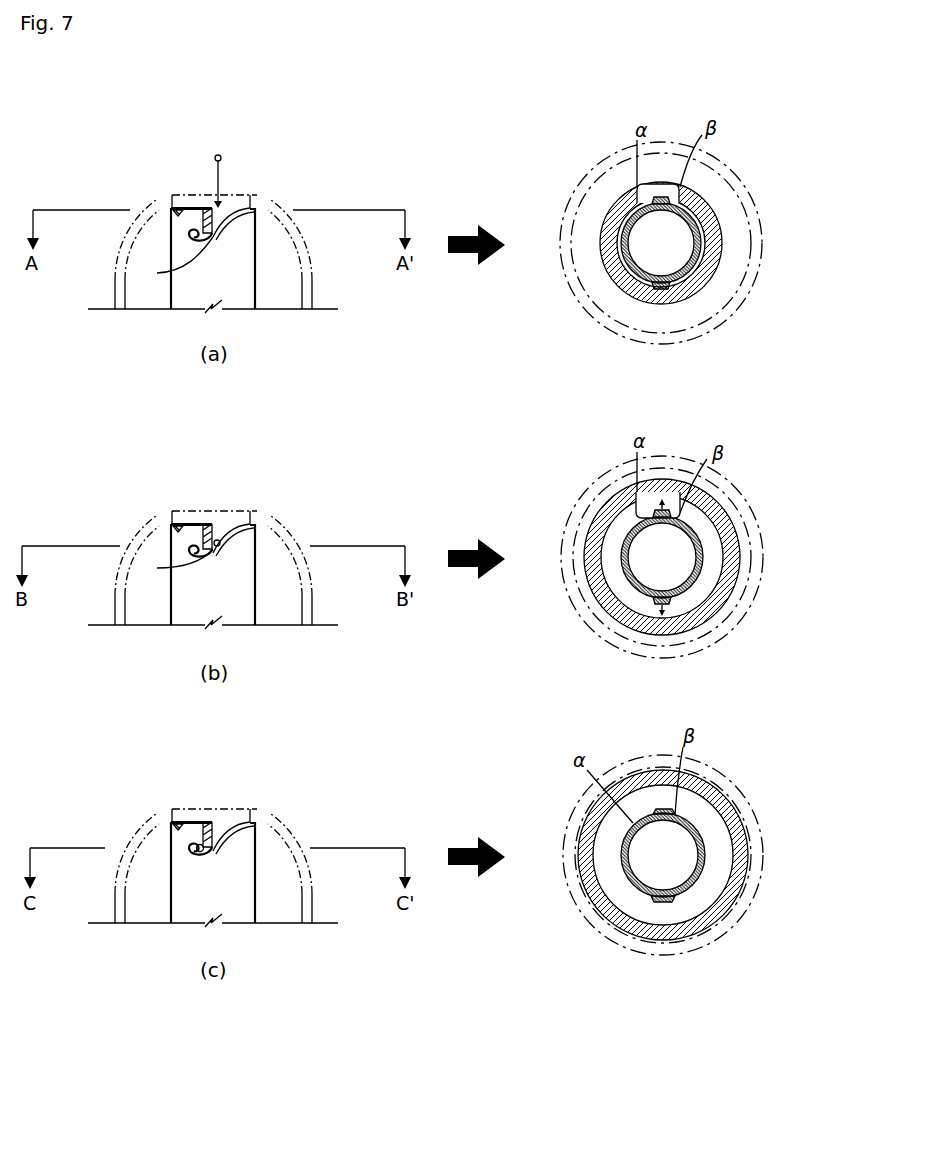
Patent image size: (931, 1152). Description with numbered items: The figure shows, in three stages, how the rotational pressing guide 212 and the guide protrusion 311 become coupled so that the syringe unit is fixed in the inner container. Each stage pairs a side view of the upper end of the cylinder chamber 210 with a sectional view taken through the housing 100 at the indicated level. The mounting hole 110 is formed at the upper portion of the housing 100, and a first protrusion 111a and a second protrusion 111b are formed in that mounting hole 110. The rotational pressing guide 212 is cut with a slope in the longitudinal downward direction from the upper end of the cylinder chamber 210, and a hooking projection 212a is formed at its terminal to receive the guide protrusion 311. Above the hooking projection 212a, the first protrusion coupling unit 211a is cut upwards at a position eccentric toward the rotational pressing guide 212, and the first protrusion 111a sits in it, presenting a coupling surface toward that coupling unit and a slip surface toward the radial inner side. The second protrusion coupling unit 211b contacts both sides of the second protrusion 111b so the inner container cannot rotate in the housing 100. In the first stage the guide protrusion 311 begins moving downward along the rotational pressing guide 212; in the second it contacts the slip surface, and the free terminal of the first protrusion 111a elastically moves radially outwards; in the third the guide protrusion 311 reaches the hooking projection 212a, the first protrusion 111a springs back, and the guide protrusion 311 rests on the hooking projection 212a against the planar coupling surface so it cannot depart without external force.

The housing 100 is at (620, 143).
The mounting hole 110 is at (290, 207).
The first protrusion 111a is at (207, 208).
The second protrusion 111b is at (172, 215).
The cylinder chamber 210 is at (262, 267).
The first protrusion coupling unit 211a is at (157, 275).
The second protrusion coupling unit 211b is at (172, 230).
The rotational pressing guide 212 is at (260, 190).
The hooking projection 212a is at (200, 232).
The guide protrusion 311 is at (222, 157).